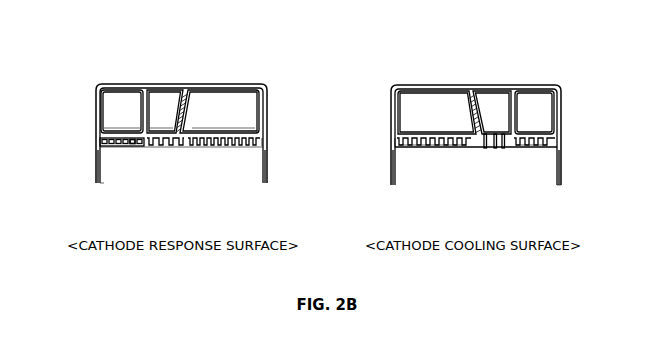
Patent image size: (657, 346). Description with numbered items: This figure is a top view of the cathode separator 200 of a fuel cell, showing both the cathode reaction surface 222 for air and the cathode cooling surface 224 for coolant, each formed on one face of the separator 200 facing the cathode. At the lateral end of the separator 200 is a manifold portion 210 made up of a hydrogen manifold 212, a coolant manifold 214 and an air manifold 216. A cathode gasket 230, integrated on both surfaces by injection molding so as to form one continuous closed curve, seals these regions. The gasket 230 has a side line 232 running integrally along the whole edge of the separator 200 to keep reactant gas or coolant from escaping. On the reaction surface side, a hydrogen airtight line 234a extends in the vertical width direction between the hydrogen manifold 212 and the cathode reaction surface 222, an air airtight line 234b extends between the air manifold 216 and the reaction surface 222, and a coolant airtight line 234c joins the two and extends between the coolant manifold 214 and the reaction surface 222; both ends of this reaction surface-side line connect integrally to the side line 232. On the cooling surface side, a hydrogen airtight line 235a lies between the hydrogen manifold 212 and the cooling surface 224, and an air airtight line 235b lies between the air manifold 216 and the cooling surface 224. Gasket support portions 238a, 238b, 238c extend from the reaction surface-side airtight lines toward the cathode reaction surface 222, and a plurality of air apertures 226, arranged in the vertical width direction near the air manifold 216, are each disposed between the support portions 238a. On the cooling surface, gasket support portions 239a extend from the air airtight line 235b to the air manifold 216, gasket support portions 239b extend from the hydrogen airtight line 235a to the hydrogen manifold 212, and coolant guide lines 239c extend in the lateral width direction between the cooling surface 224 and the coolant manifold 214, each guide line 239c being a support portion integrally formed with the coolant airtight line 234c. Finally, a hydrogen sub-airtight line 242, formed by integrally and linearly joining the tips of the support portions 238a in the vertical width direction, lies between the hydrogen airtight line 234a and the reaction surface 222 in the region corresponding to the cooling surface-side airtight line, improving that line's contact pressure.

The cathode separator 200 is at (386, 81).
The manifold portion 210 is at (228, 40).
The hydrogen manifold 212 is at (110, 100).
The coolant manifold 214 is at (168, 100).
The air manifold 216 is at (213, 100).
The cathode reaction surface 222 is at (248, 175).
The cathode cooling surface 224 is at (543, 173).
The air apertures 226 is at (262, 140).
The cathode gasket 230 is at (96, 124).
The side line 232 is at (99, 165).
The cathode reaction surface-side hydrogen airtight line 234a is at (113, 133).
The cathode reaction surface-side air airtight line 234b is at (237, 131).
The cathode reaction surface-side coolant airtight line 234c is at (157, 137).
The cathode cooling surface-side hydrogen airtight line 235a is at (523, 146).
The cathode cooling surface-side air airtight line 235b is at (408, 145).
The gasket support portions 238a is at (117, 147).
The comb fins (238) 238b is at (243, 147).
The notched fins (238) 238c is at (173, 147).
The gasket support portions 239a is at (537, 134).
The gasket support portions 239b is at (402, 138).
The coolant guide lines 239c is at (490, 148).
The hydrogen sub-airtight line 242 is at (133, 148).